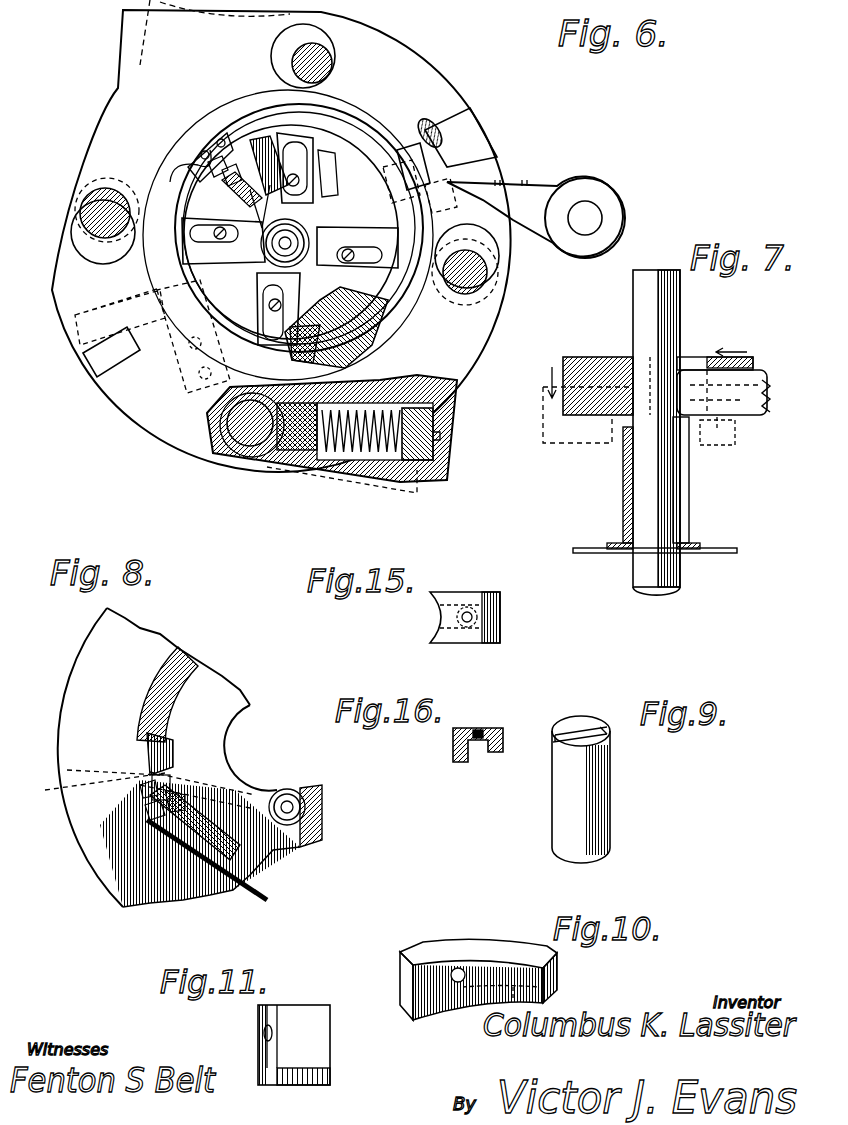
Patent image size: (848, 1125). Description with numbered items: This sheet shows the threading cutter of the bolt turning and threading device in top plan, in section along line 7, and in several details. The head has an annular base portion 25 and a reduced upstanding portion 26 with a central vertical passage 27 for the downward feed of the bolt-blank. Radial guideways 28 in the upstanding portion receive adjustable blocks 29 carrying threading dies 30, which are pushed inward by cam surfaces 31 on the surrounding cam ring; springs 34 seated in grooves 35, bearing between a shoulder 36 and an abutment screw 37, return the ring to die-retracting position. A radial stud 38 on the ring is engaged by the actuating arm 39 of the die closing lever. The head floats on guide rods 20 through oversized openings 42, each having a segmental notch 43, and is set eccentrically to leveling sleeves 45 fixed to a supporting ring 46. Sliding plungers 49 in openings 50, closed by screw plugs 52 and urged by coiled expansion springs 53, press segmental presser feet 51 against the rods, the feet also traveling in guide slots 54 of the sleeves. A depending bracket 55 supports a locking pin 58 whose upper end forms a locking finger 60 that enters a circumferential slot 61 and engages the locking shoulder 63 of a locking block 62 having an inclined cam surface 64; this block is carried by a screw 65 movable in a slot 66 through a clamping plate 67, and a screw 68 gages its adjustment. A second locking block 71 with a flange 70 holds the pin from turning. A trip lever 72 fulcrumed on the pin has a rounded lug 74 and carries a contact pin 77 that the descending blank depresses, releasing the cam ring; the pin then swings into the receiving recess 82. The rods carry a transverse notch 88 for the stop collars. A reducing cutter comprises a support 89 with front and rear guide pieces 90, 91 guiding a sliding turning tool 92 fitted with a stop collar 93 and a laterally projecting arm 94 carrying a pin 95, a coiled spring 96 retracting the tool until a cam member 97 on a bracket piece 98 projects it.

In FIG. 6, the section line 7— 7 is at (204, 412).
In FIG. 6, the guide rod 20 is at (335, 66).
In FIG. 7, the guide rod 20 is at (643, 325).
In FIG. 6, the annular base portion 25 is at (398, 62).
In FIG. 6, the reduced annular upstanding portion 26 is at (353, 192).
In FIG. 8, the reduced annular upstanding portion 26 is at (220, 705).
In FIG. 8, the central vertical passage 27 is at (227, 737).
In FIG. 6, the radial guideway 28 is at (313, 209).
In FIG. 6, the adjustable block 29 is at (318, 175).
In FIG. 6, the threading die 30 is at (288, 235).
In FIG. 6, the cam surface 31 is at (192, 168).
In FIG. 8, the cam surface 31 is at (183, 672).
In FIG. 6, the spring 34 is at (375, 318).
In FIG. 6, the groove 35 is at (298, 290).
In FIG. 6, the shoulder 36 is at (365, 300).
In FIG. 6, the abutment screw 37 is at (298, 355).
In FIG. 6, the radial stud 38 is at (442, 140).
In FIG. 6, the actuating arm 39 is at (508, 195).
In FIG. 6, the opening 42 is at (285, 88).
In FIG. 7, the opening 42 is at (687, 367).
In FIG. 6, the segmental notch 43 is at (500, 300).
In FIG. 7, the segmental notch 43 is at (632, 352).
In FIG. 6, the guiding and leveling sleeve 45 is at (80, 215).
In FIG. 7, the guiding and leveling sleeve 45 is at (622, 482).
In FIG. 7, the supporting ring 46 is at (738, 551).
In FIG. 6, the sliding plunger 49 is at (318, 470).
In FIG. 7, the sliding plunger 49 is at (732, 418).
In FIG. 6, the opening 50 is at (362, 455).
In FIG. 7, the opening 50 is at (740, 390).
In FIG. 7, the presser foot 51 is at (690, 468).
In FIG. 6, the screw plug 52 is at (445, 410).
In FIG. 6, the coiled expansion spring 53 is at (400, 475).
In FIG. 7, the coiled expansion spring 53 is at (770, 396).
In FIG. 7, the guide slot 54 is at (680, 527).
In FIG. 6, the depending bracket 55 is at (167, 266).
In FIG. 9, the locking pin 58 is at (580, 785).
In FIG. 9, the locking finger 60 is at (594, 727).
In FIG. 8, the circumferential slot 61 is at (142, 746).
In FIG. 8, the locking block 62 is at (203, 818).
In FIG. 10, the locking block 62 is at (450, 948).
In FIG. 11, the locking block 62 is at (307, 1010).
In FIG. 8, the locking shoulder 63 is at (170, 780).
In FIG. 10, the locking shoulder 63 is at (550, 975).
In FIG. 11, the locking shoulder 63 is at (317, 1030).
In FIG. 8, the inclined cam surface 64 is at (182, 792).
In FIG. 10, the inclined cam surface 64 is at (475, 1000).
In FIG. 11, the inclined cam surface 64 is at (312, 1075).
In FIG. 8, the screw 65 is at (148, 812).
In FIG. 8, the slot 66 is at (165, 845).
In FIG. 8, the clamping plate 67 is at (140, 790).
In FIG. 8, the screw 68 is at (252, 898).
In FIG. 16, the flange 70 is at (470, 755).
In FIG. 15, the locking block 71 is at (500, 616).
In FIG. 16, the locking block 71 is at (500, 736).
In FIG. 6, the trip lever 72 is at (252, 285).
In FIG. 8, the trip lever 72 is at (277, 797).
In FIG. 6, the rounded lug 74 is at (82, 338).
In FIG. 8, the rounded lug 74 is at (62, 790).
In FIG. 6, the contact pin 77 is at (292, 240).
In FIG. 8, the contact pin 77 is at (288, 804).
In FIG. 8, the receiving recess 82 is at (298, 835).
In FIG. 7, the transverse notch 88 is at (672, 566).
In FIG. 6, the support 89 is at (241, 160).
In FIG. 6, the front guide piece 90 is at (352, 151).
In FIG. 6, the rear guide piece 91 is at (168, 188).
In FIG. 6, the sliding turning tool 92 is at (312, 212).
In FIG. 6, the stop collar 93 is at (313, 114).
In FIG. 6, the laterally projecting arm 94 is at (275, 150).
In FIG. 6, the pin 95 is at (172, 183).
In FIG. 6, the coiled spring 96 is at (320, 134).
In FIG. 6, the cam member 97 is at (190, 160).
In FIG. 6, the bracket piece 98 is at (212, 150).